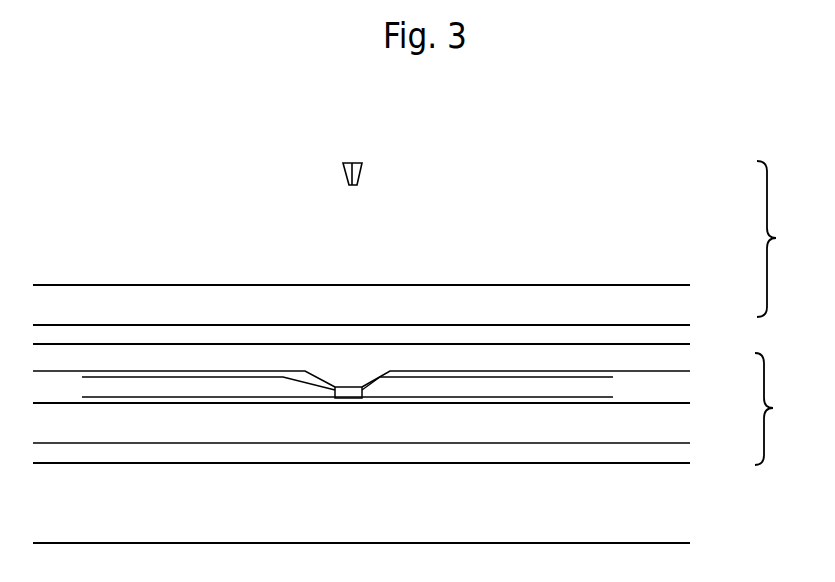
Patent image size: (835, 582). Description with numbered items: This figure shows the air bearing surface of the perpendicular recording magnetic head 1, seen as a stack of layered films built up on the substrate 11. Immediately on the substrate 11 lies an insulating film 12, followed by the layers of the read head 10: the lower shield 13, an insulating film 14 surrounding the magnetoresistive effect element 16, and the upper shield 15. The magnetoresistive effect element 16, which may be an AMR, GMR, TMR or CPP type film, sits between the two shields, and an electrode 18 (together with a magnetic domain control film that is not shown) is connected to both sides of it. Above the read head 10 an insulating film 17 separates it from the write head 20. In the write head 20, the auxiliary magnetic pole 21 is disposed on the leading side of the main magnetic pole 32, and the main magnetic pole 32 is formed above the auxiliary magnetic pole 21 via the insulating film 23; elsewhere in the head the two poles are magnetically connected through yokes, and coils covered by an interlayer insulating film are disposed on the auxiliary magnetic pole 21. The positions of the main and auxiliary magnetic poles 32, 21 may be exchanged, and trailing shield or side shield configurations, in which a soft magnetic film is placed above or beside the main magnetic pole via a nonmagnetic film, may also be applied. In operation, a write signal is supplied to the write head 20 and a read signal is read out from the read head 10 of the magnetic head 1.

The magnetic head 1 is at (524, 159).
The read head 10 is at (787, 409).
The substrate 11 is at (649, 503).
The insulating film 12 is at (649, 454).
The lower shield 13 is at (649, 424).
The insulating film 14 is at (482, 375).
The upper shield 15 is at (649, 363).
The magnetoresistive effect element 16 is at (348, 392).
The insulating film 17 is at (649, 338).
The electrode 18 is at (124, 389).
The write head 20 is at (788, 239).
The auxiliary magnetic pole 21 is at (649, 309).
The insulating film 23 is at (649, 228).
The main magnetic pole 32 is at (339, 174).